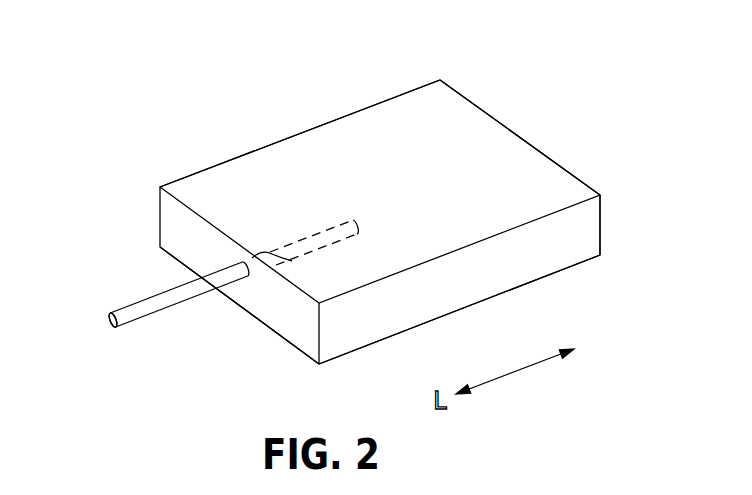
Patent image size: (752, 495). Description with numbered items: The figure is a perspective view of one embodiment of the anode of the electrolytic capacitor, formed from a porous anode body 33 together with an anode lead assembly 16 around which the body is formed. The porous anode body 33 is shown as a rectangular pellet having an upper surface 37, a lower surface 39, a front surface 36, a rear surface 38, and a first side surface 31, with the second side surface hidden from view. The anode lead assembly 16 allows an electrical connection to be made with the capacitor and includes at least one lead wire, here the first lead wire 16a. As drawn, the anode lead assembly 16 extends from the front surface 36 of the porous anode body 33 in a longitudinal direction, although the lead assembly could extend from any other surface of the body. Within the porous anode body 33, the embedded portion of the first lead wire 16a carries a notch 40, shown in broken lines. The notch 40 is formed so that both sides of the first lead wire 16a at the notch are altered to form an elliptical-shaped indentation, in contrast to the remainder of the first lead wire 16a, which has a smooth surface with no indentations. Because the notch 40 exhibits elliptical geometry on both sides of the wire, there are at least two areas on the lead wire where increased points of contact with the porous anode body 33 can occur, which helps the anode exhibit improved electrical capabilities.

The anode lead assembly 16 is at (95, 330).
The first lead wire 16a is at (136, 314).
The first side surface 31 is at (432, 294).
The porous anode body 33 is at (324, 160).
The front surface 36 is at (267, 308).
The upper surface 37 is at (553, 193).
The rear surface 38 is at (493, 117).
The lower surface 39 is at (437, 318).
The notch 40 is at (283, 250).